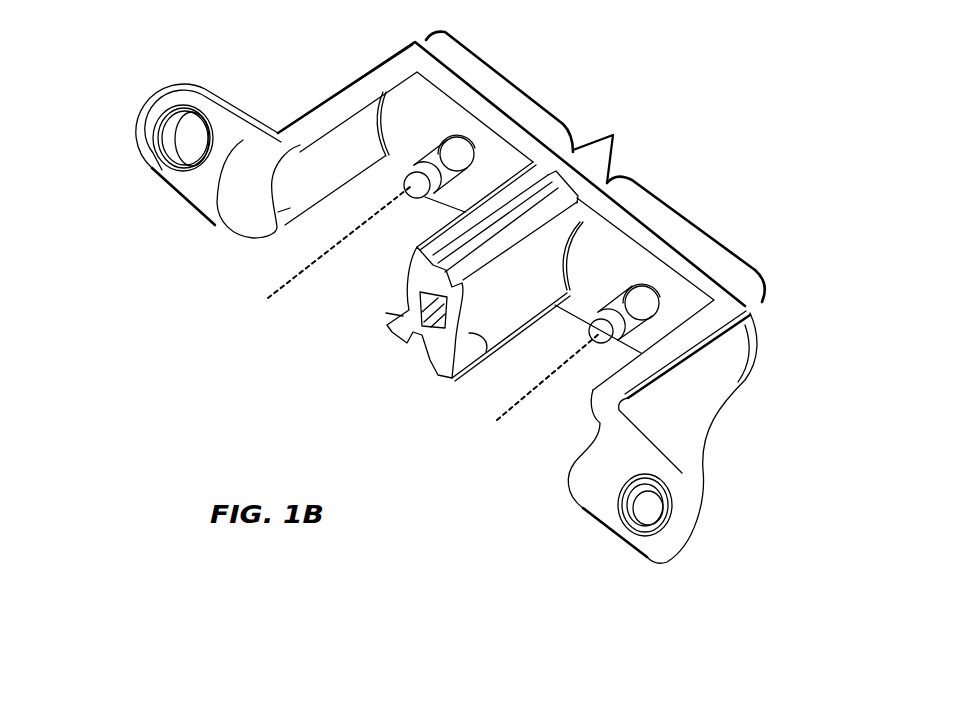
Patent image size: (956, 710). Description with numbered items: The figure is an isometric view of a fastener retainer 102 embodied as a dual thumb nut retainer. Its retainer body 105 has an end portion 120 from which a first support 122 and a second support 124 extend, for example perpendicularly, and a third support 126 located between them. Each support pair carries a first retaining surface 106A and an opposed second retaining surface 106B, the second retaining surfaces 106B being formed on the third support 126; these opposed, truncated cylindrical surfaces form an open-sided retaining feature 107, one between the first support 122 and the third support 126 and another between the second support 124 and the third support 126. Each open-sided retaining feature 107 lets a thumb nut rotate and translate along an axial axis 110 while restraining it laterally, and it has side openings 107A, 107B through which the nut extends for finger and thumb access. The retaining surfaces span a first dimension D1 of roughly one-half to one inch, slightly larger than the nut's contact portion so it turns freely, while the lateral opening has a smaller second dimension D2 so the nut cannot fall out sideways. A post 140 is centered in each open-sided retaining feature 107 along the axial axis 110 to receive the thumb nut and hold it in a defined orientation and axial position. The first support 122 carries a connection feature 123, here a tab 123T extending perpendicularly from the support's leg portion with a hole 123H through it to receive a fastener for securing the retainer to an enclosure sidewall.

The fastener retainer 102 is at (685, 143).
The retainer body 105 is at (757, 345).
The first retaining surface 106A is at (278, 212).
The second retaining surface 106B is at (385, 279).
The open-sided retaining feature 107 is at (305, 305).
The side opening 107A is at (360, 134).
The side opening 107B is at (330, 320).
The axial axis 110 is at (290, 282).
The end portion 120 is at (595, 167).
The first support 122 is at (714, 413).
The connection feature 123 is at (152, 80).
The hole 123H is at (183, 170).
The tab 123T is at (137, 143).
The second support 124 is at (326, 92).
The third support 126 is at (429, 376).
The post 140 is at (430, 152).
The first dimension D1 is at (282, 191).
The second dimension D2 is at (507, 168).